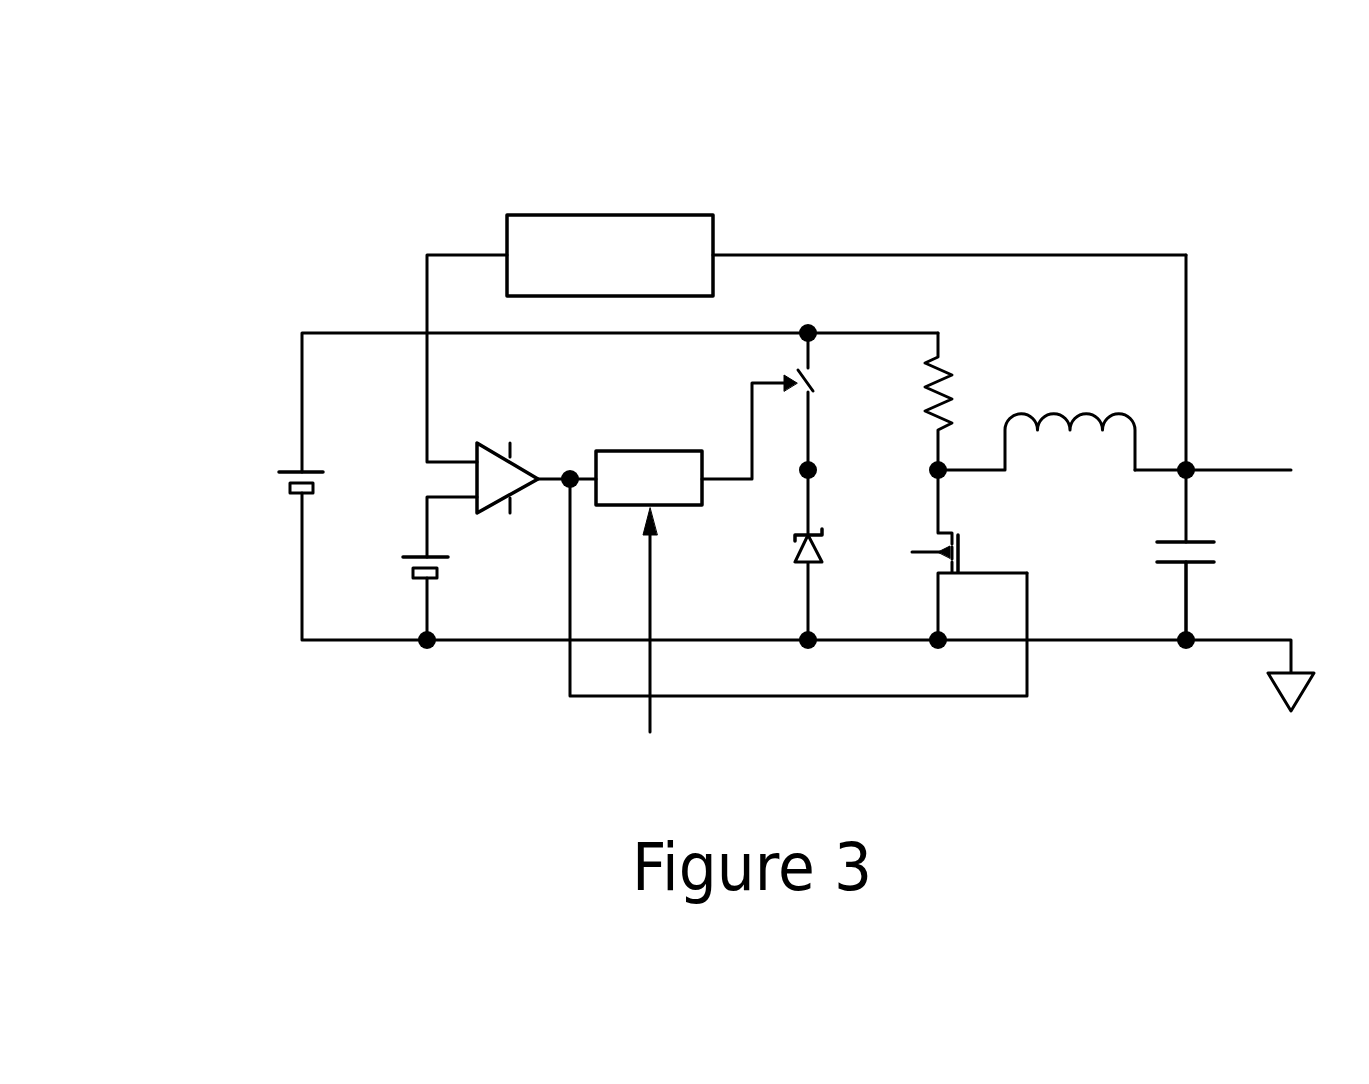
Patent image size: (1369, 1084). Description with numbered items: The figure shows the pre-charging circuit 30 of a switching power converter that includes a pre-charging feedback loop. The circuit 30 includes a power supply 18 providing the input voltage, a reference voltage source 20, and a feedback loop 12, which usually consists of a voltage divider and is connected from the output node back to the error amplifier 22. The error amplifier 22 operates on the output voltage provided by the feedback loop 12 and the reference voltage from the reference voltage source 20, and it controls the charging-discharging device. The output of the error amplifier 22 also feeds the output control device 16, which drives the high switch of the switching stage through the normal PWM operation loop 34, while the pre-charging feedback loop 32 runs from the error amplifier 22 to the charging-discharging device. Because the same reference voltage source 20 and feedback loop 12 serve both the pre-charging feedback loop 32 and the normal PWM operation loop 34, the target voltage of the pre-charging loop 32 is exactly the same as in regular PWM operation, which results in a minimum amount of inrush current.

The feedback loop 12 is at (655, 215).
The output control device 16 is at (650, 450).
The power supply 18 is at (305, 471).
The reference voltage source 20 is at (437, 573).
The error amplifier 22 is at (490, 440).
The pre-charging circuit 30 is at (1134, 216).
The pre-charging feedback loop 32 is at (855, 698).
The normal PWM operation loop 34 is at (727, 483).